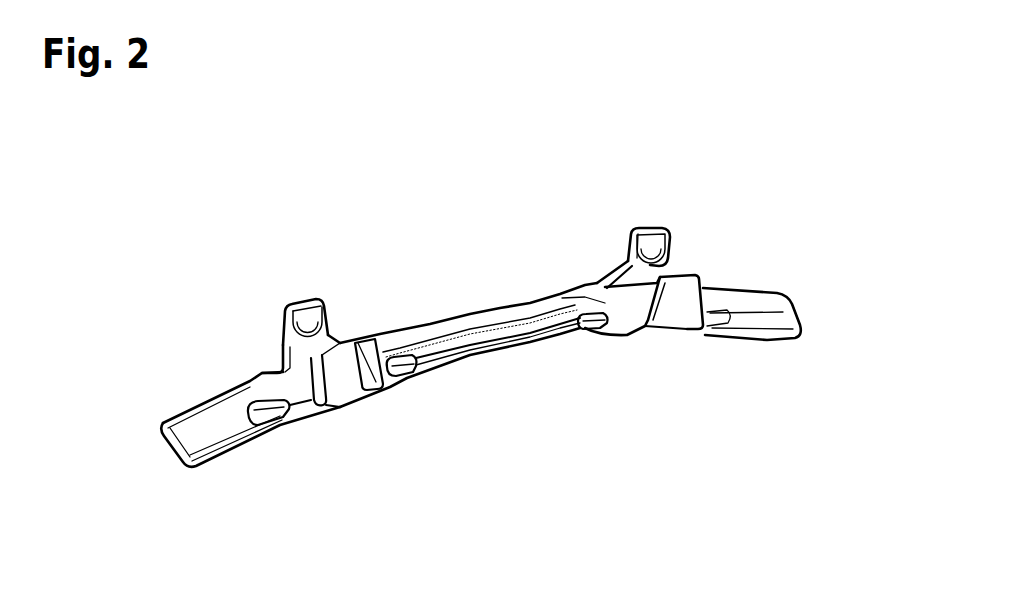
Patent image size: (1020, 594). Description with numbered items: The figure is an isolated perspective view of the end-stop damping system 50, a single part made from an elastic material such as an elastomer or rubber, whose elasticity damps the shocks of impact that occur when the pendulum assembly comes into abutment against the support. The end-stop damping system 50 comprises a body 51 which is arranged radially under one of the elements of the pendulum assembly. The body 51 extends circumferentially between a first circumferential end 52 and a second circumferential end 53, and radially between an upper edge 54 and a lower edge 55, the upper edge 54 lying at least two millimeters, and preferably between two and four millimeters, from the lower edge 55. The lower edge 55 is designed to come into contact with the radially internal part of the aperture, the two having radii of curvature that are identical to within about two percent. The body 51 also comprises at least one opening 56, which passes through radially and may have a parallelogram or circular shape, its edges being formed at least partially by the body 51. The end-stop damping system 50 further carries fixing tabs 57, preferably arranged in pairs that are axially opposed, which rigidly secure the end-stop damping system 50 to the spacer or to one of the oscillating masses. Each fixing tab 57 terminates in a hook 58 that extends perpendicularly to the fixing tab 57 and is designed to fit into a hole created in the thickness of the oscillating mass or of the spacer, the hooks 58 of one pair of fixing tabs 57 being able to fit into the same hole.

The end-stop damping system 50 is at (231, 462).
The body 51 is at (503, 305).
The first circumferential end 52 is at (168, 438).
The second circumferential end 53 is at (797, 311).
The upper edge 54 is at (743, 302).
The lower edge 55 is at (513, 352).
The opening 56 is at (297, 389).
The fixing tab 57 is at (283, 344).
The hook 58 is at (305, 320).